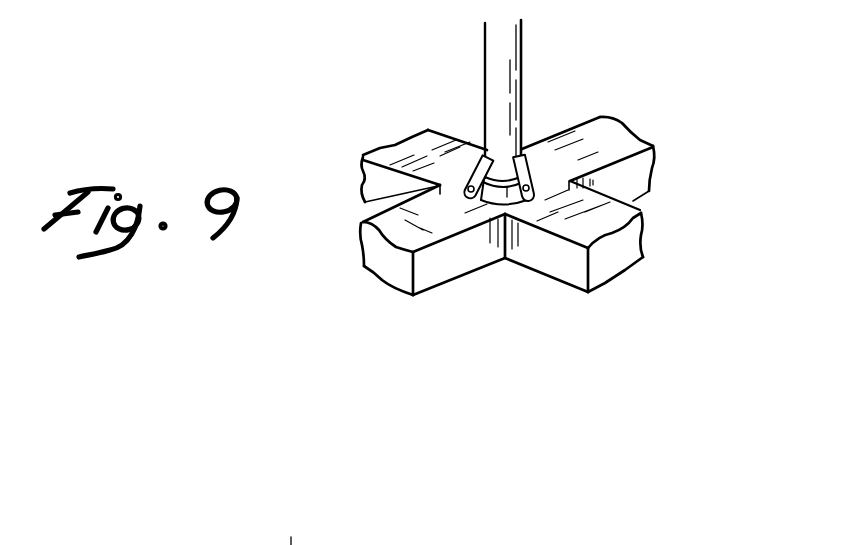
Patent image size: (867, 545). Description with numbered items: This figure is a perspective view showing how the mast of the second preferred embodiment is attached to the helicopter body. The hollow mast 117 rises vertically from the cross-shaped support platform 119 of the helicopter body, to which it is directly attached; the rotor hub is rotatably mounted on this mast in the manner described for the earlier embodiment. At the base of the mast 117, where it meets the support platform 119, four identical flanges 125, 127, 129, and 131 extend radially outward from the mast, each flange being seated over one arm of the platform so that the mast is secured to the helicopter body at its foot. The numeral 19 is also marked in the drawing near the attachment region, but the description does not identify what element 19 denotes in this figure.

The clamp 19 is at (467, 181).
The hollow mast 117 is at (524, 42).
The support platform 119 is at (620, 142).
The flange 125 is at (537, 123).
The flange 127 is at (478, 232).
The flange 129 is at (567, 209).
The flange 131 is at (460, 145).